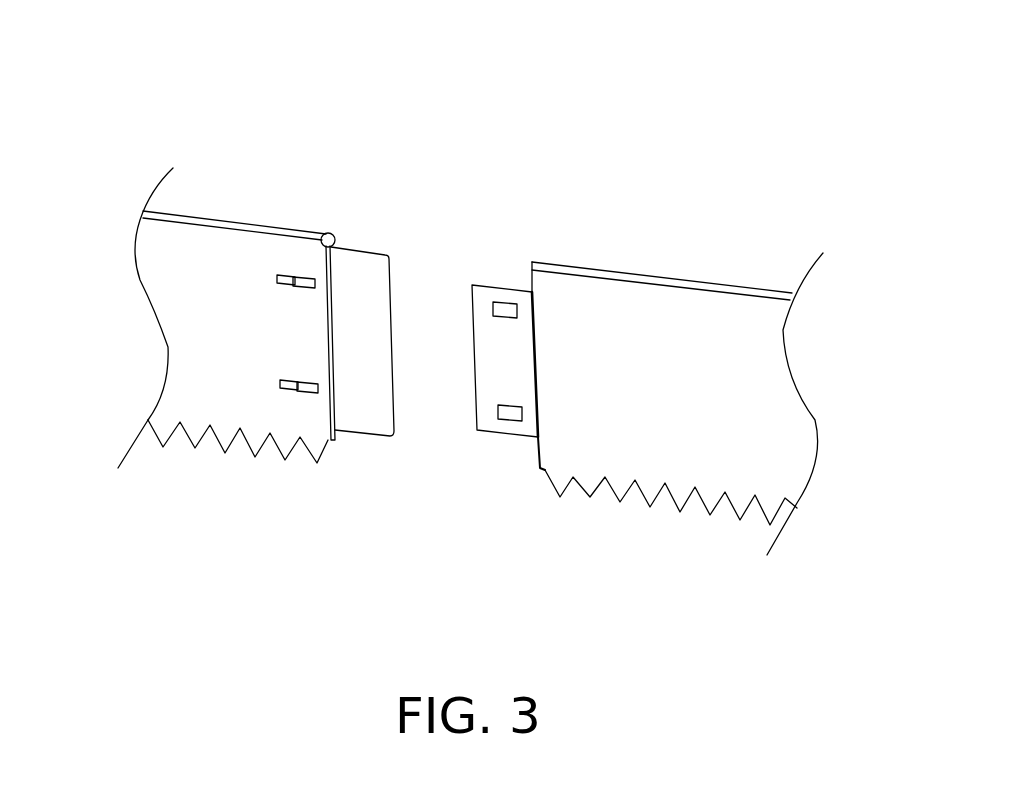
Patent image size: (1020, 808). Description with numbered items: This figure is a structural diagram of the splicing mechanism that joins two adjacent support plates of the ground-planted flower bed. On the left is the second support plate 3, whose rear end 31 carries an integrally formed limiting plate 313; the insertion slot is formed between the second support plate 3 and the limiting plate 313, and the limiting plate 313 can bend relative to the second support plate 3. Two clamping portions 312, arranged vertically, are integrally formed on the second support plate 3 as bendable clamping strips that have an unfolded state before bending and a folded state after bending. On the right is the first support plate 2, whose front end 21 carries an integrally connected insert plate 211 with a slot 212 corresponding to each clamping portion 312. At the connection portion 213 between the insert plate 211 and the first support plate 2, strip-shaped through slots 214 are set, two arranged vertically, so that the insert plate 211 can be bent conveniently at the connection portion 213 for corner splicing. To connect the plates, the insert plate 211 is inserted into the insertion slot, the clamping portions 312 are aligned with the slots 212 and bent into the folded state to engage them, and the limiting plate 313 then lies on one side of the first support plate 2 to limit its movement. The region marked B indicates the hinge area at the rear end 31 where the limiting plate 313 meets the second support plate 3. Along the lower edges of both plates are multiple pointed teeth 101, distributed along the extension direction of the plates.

The first support plate 2 is at (643, 347).
The front end 21 is at (531, 463).
The insert plate 211 is at (510, 367).
The slot 212 is at (510, 307).
The connection portion 213 is at (539, 418).
The strip-shaped through slot 214 is at (537, 388).
The second support plate 3 is at (217, 283).
The rear end 31 is at (328, 441).
The clamping portion 312 is at (283, 272).
The limiting plate 313 is at (372, 313).
The hinge pivot B is at (337, 227).
The pointed tooth 101 is at (256, 456).